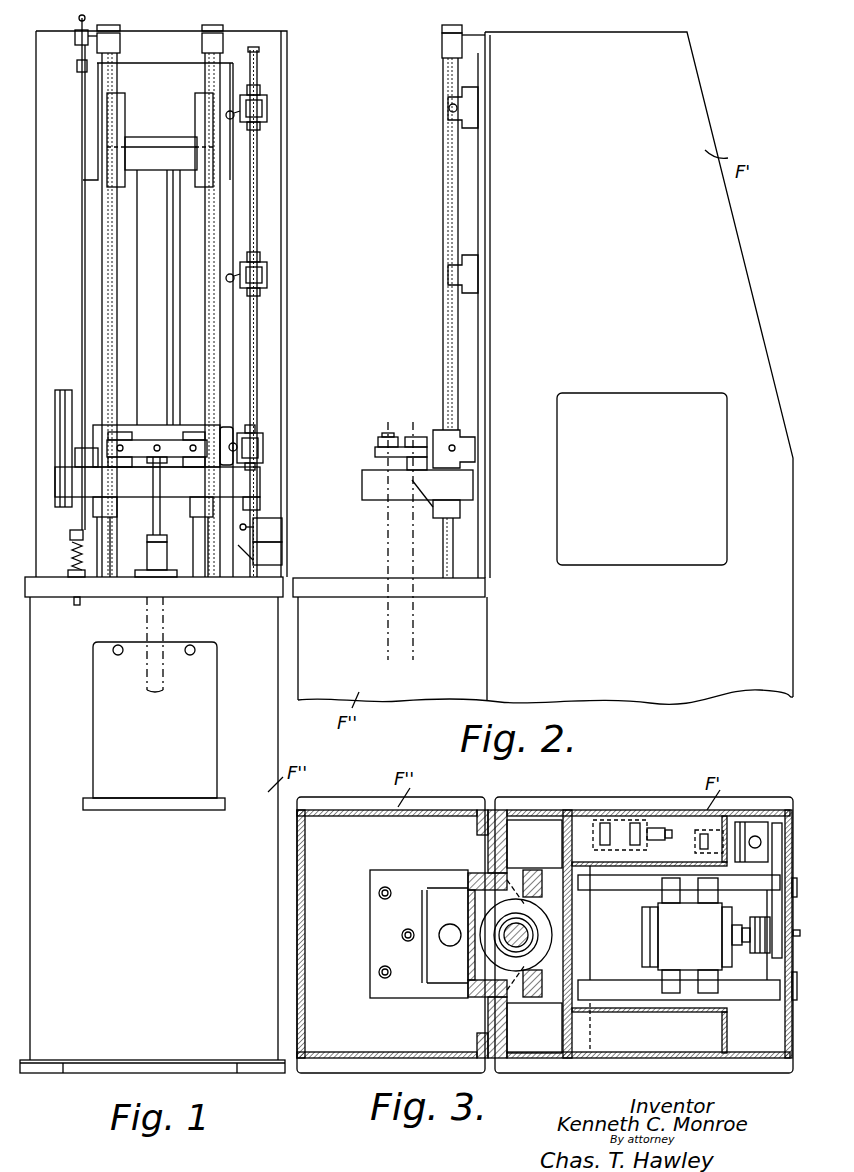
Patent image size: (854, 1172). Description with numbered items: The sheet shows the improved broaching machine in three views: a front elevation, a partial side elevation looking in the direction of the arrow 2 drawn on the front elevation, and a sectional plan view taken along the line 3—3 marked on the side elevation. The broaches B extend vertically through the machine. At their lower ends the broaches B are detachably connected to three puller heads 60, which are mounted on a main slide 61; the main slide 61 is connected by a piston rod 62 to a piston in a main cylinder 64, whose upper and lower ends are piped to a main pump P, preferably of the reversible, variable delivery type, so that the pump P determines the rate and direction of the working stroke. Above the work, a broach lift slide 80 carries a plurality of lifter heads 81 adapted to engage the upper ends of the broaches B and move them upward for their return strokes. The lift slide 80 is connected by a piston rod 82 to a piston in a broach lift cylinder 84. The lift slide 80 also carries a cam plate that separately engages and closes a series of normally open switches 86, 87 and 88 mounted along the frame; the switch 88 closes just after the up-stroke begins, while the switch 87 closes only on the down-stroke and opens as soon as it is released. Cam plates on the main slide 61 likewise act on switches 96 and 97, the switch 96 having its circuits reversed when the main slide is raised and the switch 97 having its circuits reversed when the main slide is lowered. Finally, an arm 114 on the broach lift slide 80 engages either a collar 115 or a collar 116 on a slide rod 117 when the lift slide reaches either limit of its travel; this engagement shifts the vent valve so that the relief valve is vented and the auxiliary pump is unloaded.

In FIG. 1, the collar 115 is at (77, 68).
In FIG. 1, the slide rod 117 is at (85, 240).
In FIG. 1, the switch 86 is at (267, 108).
In FIG. 2, the switch 86 is at (448, 108).
In FIG. 1, the switch 87 is at (267, 275).
In FIG. 2, the switch 87 is at (448, 272).
In FIG. 1, the switch 88 is at (263, 448).
In FIG. 2, the switch 88 is at (456, 448).
In FIG. 1, the arm 114 is at (106, 462).
In FIG. 1, the piston rod 82 is at (153, 528).
In FIG. 1, the collar 116 is at (70, 536).
In FIG. 1, the switch 97 is at (282, 531).
In FIG. 1, the switch 96 is at (282, 557).
In FIG. 1, the broach lift cylinder 84 is at (147, 614).
In FIG. 2, the lifter heads 81 is at (405, 436).
In FIG. 2, the broach lift slide 80 is at (457, 514).
In FIG. 3, the puller heads 60 is at (388, 966).
In FIG. 3, the main slide 61 is at (485, 973).
In FIG. 3, the piston rod 62 is at (524, 926).
In FIG. 3, the main cylinder 64 is at (541, 947).
In FIG. 1, the arrow 2 is at (299, 206).
In FIG. 2, the section line 3 is at (293, 610).
In FIG. 2, the broaches B is at (412, 560).
In FIG. 3, the main pump P is at (706, 935).